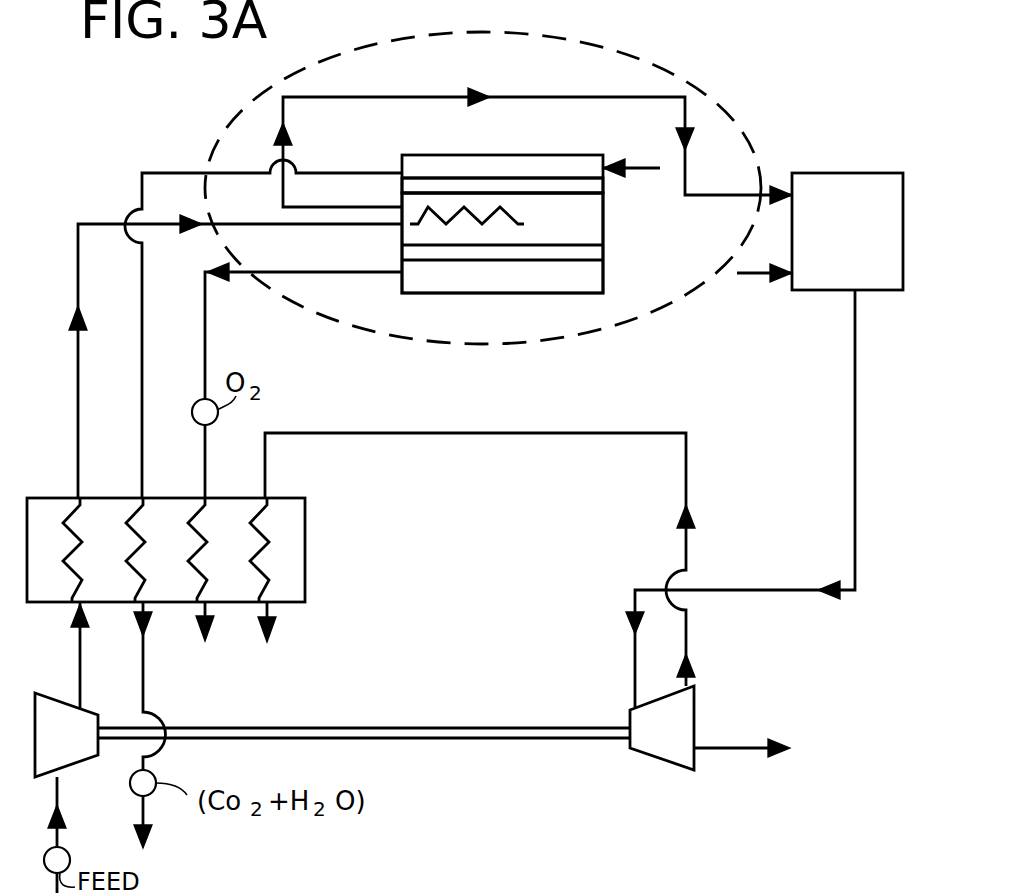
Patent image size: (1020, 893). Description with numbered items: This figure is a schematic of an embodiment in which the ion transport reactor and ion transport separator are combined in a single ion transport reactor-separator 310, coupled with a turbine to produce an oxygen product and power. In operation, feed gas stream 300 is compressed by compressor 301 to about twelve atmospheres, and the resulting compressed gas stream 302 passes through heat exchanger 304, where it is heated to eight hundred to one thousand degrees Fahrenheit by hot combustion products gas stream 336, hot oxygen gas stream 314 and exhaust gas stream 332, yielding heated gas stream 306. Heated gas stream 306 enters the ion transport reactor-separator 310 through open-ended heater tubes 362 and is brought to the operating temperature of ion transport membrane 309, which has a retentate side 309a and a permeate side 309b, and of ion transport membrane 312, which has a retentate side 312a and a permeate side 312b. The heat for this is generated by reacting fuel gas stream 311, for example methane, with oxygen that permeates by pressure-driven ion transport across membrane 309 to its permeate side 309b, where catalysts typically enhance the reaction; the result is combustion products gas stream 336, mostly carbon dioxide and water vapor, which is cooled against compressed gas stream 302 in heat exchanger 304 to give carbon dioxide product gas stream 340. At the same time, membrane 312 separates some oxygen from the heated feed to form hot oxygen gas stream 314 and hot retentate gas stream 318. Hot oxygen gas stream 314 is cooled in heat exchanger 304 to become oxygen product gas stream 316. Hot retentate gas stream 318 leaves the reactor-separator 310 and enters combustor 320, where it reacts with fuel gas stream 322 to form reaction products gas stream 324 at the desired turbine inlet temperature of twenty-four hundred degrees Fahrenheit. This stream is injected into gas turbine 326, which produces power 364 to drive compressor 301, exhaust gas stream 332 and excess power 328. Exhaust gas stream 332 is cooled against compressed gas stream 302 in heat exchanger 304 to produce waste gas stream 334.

The feed gas stream 300 is at (63, 797).
The compressor 301 is at (83, 762).
The compressed gas stream 302 is at (80, 633).
The heat exchanger 304 is at (305, 553).
The heated gas stream 306 is at (78, 380).
The ion transport membrane 309 is at (604, 188).
The retentate side 309a is at (560, 240).
The permeate side 309b is at (573, 176).
The ion transport reactor-separator 310 is at (488, 155).
The fuel gas stream 311 is at (645, 172).
The ion transport membrane 312 is at (402, 255).
The retentate side 312a is at (585, 230).
The permeate side 312b is at (542, 262).
The hot oxygen gas stream 314 is at (292, 276).
The oxygen product gas stream 316 is at (213, 613).
The hot retentate gas stream 318 is at (417, 96).
The combustor 320 is at (810, 173).
The fuel gas stream 322 is at (750, 280).
The reaction products gas stream 324 is at (853, 373).
The gas turbine 326 is at (694, 712).
The excess power 328 is at (740, 750).
The exhaust gas stream 332 is at (605, 433).
The waste gas stream 334 is at (277, 613).
The combustion products gas stream 336 is at (355, 172).
The carbon dioxide product gas stream 340 is at (143, 660).
The open-ended heater tubes 362 is at (470, 226).
The power 364 is at (560, 720).